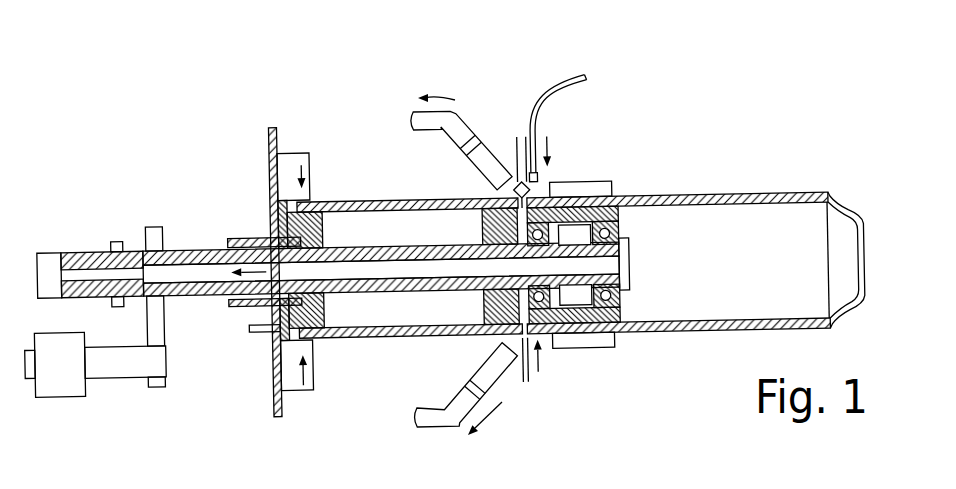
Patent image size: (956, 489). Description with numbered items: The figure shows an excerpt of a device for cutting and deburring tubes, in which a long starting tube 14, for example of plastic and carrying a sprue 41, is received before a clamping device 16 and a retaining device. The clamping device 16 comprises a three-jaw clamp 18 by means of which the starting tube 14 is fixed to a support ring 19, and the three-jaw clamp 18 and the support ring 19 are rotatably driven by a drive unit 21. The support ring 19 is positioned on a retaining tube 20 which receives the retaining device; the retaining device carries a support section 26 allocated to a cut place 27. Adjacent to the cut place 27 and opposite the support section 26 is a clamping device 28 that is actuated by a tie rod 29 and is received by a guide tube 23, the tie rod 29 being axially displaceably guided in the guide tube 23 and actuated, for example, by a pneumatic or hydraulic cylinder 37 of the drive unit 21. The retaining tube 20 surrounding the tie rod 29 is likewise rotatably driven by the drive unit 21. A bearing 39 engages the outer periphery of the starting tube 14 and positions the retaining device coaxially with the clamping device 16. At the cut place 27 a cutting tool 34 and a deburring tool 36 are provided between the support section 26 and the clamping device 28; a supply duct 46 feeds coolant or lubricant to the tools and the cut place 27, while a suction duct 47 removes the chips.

The starting tube 14 is at (420, 205).
The clamping device 28 is at (635, 180).
The sprue 41 is at (845, 210).
The clamping device 16 is at (255, 180).
The three-jaw clamp 18 is at (290, 153).
The support ring 19 is at (308, 222).
The retaining tube 20 is at (205, 250).
The tie rod 29 is at (392, 265).
The drive unit 21 is at (68, 230).
The pneumatic or hydraulic cylinder 37 is at (95, 255).
The support section 26 is at (500, 212).
The guide tube 23 is at (643, 325).
The deburring tool 36 is at (518, 165).
The cut place 27 is at (532, 100).
The supply duct 46 is at (592, 78).
The suction duct 47 is at (458, 125).
The cutting tool 34 is at (525, 378).
The bearing 39 is at (578, 342).